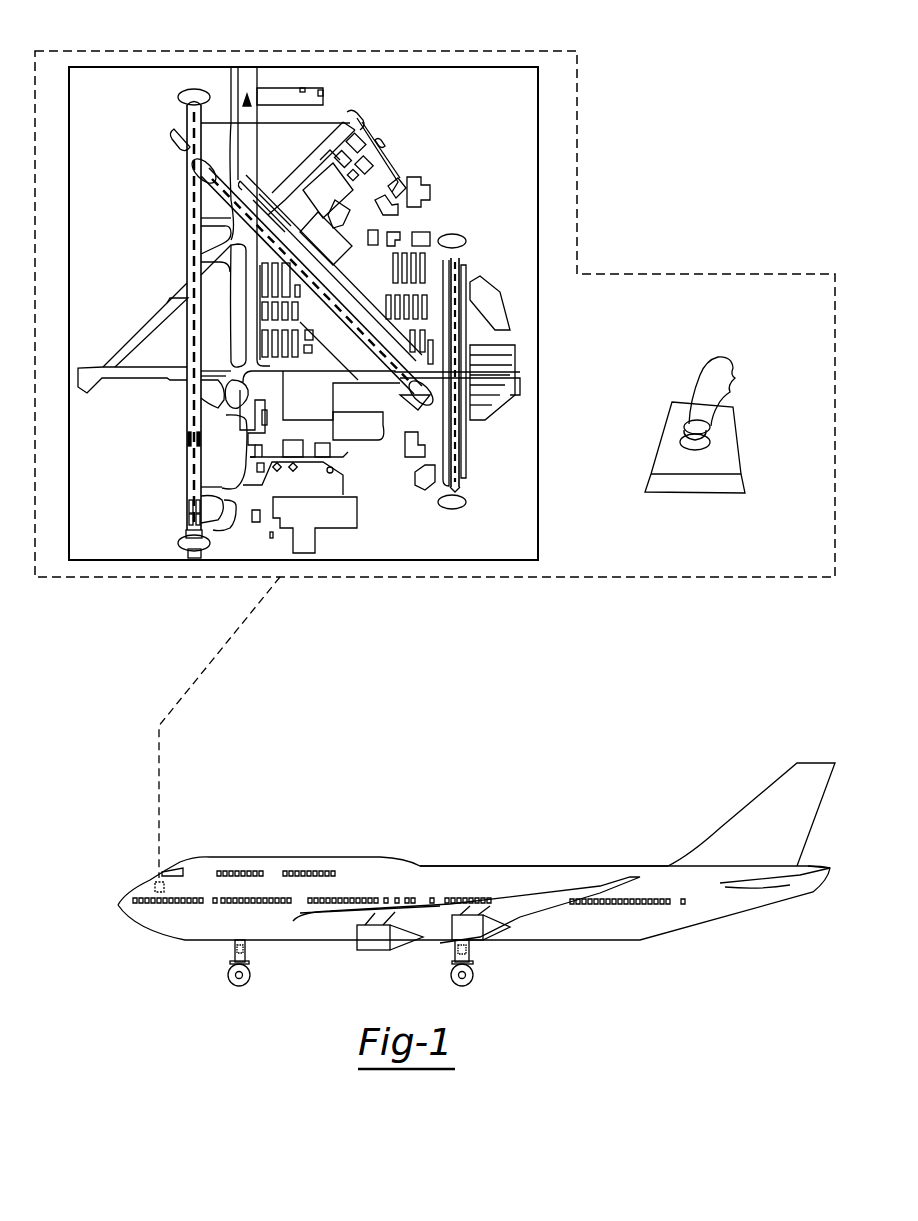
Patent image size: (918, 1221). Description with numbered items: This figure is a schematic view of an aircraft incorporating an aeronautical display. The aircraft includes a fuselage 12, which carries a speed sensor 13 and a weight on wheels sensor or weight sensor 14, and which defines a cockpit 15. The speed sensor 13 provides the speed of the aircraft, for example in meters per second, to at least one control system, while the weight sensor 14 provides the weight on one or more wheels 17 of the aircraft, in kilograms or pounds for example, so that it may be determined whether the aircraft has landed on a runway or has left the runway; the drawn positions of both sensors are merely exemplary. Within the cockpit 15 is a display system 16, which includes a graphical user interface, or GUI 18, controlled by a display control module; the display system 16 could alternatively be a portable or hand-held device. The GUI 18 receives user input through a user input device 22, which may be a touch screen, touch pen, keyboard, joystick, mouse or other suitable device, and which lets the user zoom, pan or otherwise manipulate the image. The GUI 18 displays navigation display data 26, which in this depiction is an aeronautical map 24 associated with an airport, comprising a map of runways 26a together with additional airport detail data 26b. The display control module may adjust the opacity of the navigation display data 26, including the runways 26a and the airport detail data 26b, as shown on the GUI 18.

The fuselage 12 is at (188, 925).
The speed sensor 13 is at (155, 886).
The weight sensor 14 is at (235, 949).
The cockpit 15 is at (183, 868).
The display system 16 is at (325, 580).
The wheels 17 is at (252, 978).
The graphical user interface 18 is at (136, 562).
The user input device 22 is at (710, 368).
The airport map 24 is at (430, 88).
The navigation display data 26 is at (247, 94).
The runways 26a is at (182, 97).
The airport detail data 26b is at (348, 118).